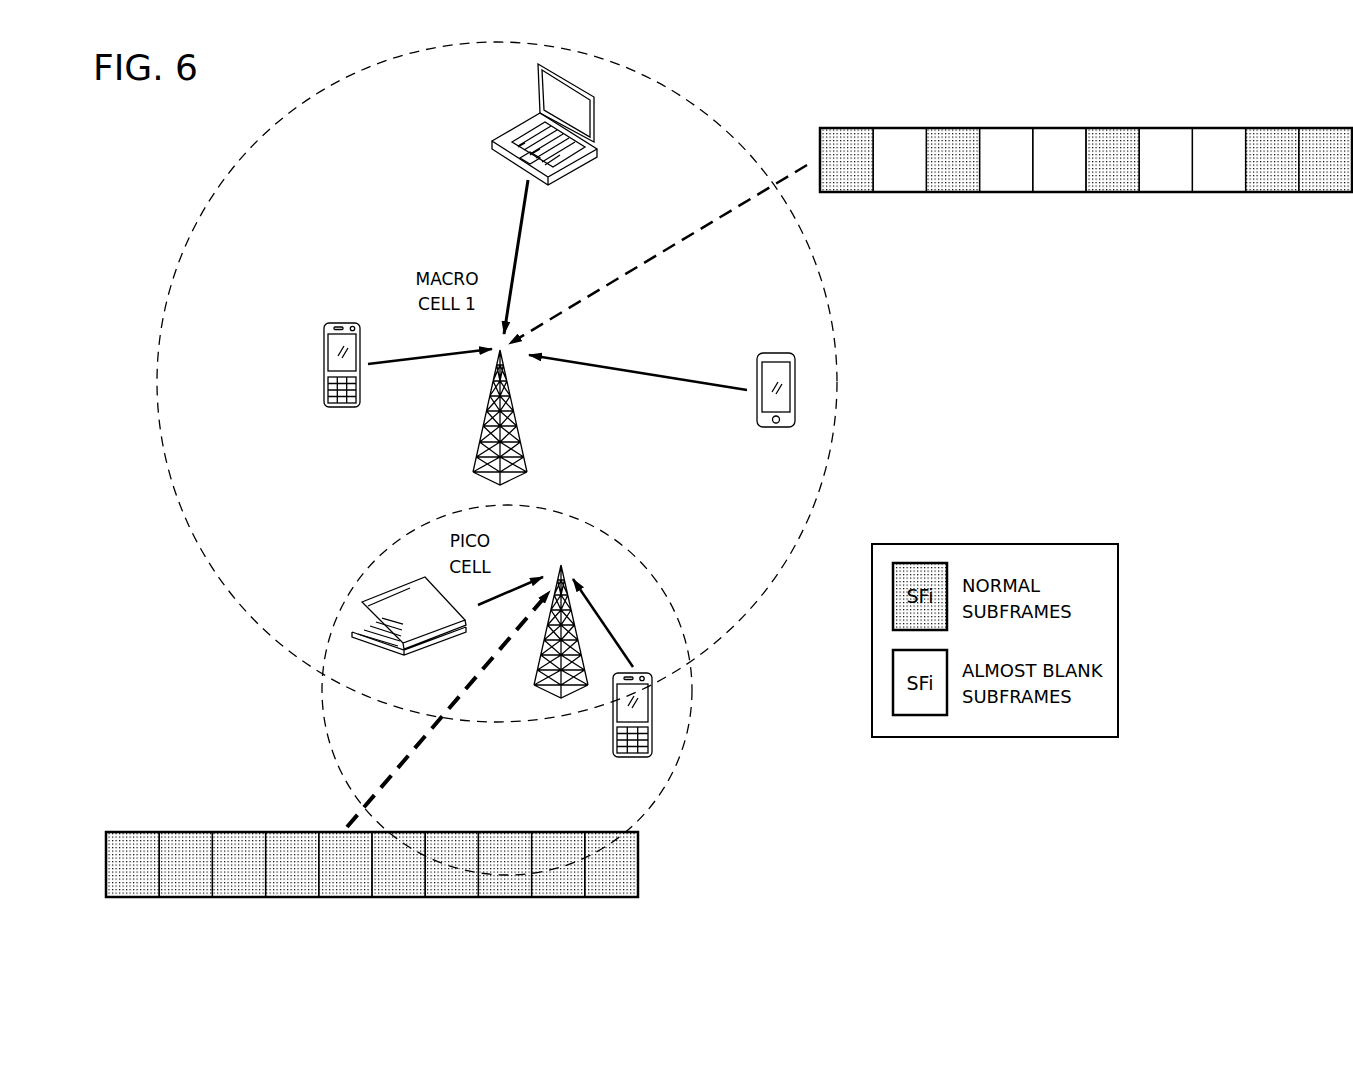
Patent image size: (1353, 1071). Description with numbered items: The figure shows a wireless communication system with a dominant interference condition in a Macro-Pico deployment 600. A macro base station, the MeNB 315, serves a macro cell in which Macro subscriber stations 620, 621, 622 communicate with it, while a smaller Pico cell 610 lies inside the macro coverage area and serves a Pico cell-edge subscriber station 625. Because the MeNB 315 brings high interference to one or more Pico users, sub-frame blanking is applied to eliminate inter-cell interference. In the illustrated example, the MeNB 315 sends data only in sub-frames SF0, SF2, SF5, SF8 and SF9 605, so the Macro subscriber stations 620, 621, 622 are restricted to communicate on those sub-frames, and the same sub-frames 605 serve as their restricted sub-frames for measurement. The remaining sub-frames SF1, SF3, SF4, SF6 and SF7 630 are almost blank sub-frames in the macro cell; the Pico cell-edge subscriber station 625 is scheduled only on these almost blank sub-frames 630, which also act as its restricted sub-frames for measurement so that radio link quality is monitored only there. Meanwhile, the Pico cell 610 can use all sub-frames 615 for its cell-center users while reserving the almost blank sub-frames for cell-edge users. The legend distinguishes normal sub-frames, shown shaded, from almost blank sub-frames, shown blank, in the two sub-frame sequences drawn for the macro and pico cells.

The Macro-Pico deployment 600 is at (195, 138).
The MeNB 315 is at (482, 428).
The Pico cell 610 is at (541, 697).
The sub-frames SF0, SF2, SF5, SF8, and SF9 605 is at (1081, 133).
The almost blank sub-frames SF1, SF3, SF4, SF6, SF7 630 is at (1059, 188).
The all sub-frames 615 is at (180, 830).
The Macro subscriber station 620 is at (323, 364).
The Macro subscriber station 621 is at (775, 429).
The Macro subscriber station 622 is at (515, 128).
The Pico cell-edge subscriber station 625 is at (633, 759).